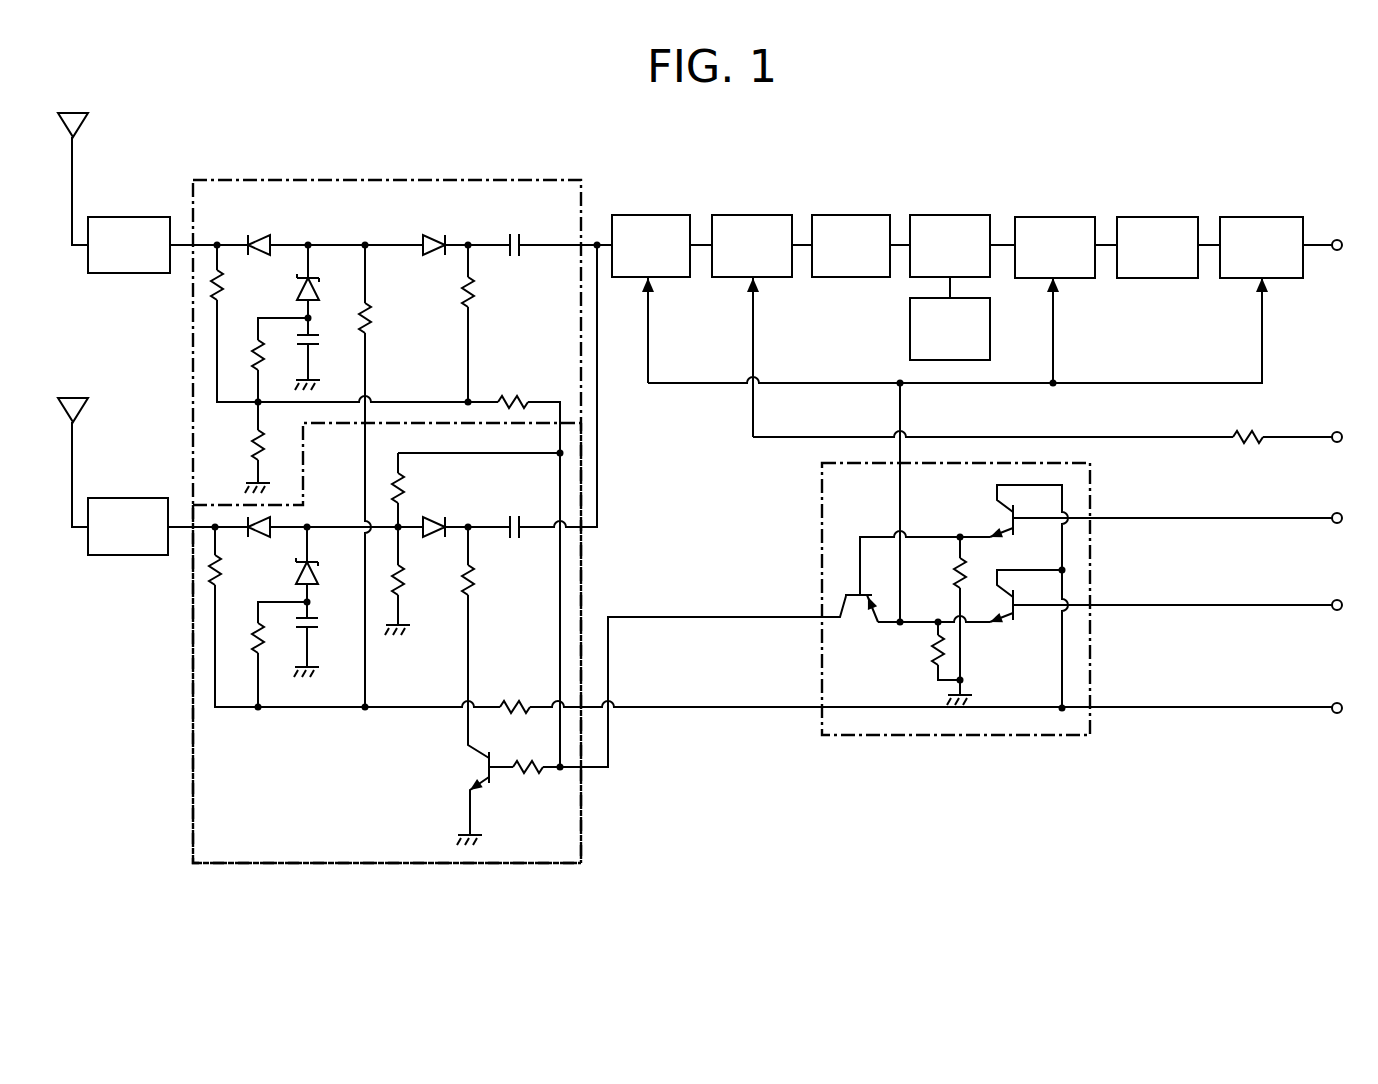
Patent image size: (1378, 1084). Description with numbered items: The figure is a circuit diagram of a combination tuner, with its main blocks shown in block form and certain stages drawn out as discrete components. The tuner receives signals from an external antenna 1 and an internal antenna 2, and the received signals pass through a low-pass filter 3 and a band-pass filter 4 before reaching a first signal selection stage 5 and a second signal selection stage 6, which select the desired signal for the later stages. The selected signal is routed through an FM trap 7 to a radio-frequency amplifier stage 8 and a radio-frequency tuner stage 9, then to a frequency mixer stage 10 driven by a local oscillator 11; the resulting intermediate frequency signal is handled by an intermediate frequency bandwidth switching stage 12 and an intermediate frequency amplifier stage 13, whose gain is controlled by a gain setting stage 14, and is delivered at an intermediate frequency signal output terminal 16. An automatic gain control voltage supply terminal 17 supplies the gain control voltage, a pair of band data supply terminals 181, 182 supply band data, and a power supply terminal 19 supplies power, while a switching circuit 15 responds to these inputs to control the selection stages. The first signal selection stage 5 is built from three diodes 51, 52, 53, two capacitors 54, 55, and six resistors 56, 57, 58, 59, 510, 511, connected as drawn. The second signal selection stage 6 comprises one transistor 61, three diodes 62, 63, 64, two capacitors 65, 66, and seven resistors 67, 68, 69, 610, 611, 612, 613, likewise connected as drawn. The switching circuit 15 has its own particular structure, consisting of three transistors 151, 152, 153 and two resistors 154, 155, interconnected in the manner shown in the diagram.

The external antenna 1 is at (90, 125).
The internal antenna 2 is at (90, 410).
The low-pass filter 3 is at (146, 217).
The band-pass filter 4 is at (146, 498).
The first signal selection stage 5 is at (497, 180).
The second signal selection stage 6 is at (582, 832).
The FM trap 7 is at (668, 215).
The radio-frequency amplifier stage 8 is at (770, 215).
The radio-frequency tuner stage 9 is at (866, 215).
The frequency mixer stage 10 is at (970, 215).
The local oscillator 11 is at (910, 330).
The intermediate frequency bandwidth switching stage 12 is at (1075, 217).
The intermediate frequency amplifier stage 13 is at (1170, 217).
The gain setting stage 14 is at (1275, 217).
The switching circuit 15 is at (1090, 478).
The intermediate frequency signal output terminal 16 is at (1337, 240).
The automatic gain control voltage supply terminal 17 is at (1337, 432).
The band data supply terminal 181 is at (1337, 600).
The band data supply terminal 182 is at (1337, 513).
The power supply terminal 19 is at (1337, 703).
The diode 51 is at (262, 235).
The diode 52 is at (430, 235).
The diode 53 is at (318, 297).
The capacitor 54 is at (515, 236).
The capacitor 55 is at (319, 345).
The resistor 56 is at (222, 290).
The resistor 57 is at (252, 350).
The resistor 58 is at (252, 440).
The resistor 59 is at (372, 322).
The resistor 510 is at (474, 296).
The resistor 511 is at (512, 396).
The transistor 61 is at (473, 764).
The diode 62 is at (258, 538).
The diode 63 is at (432, 538).
The diode 64 is at (318, 582).
The capacitor 65 is at (514, 516).
The capacitor 66 is at (319, 630).
The resistor 67 is at (221, 580).
The resistor 68 is at (252, 645).
The resistor 69 is at (405, 485).
The resistor 610 is at (404, 592).
The resistor 611 is at (474, 586).
The resistor 612 is at (514, 700).
The resistor 613 is at (528, 772).
The transistor 151 is at (1003, 624).
The transistor 152 is at (995, 518).
The transistor 153 is at (856, 612).
The resistor 154 is at (934, 650).
The resistor 155 is at (956, 569).